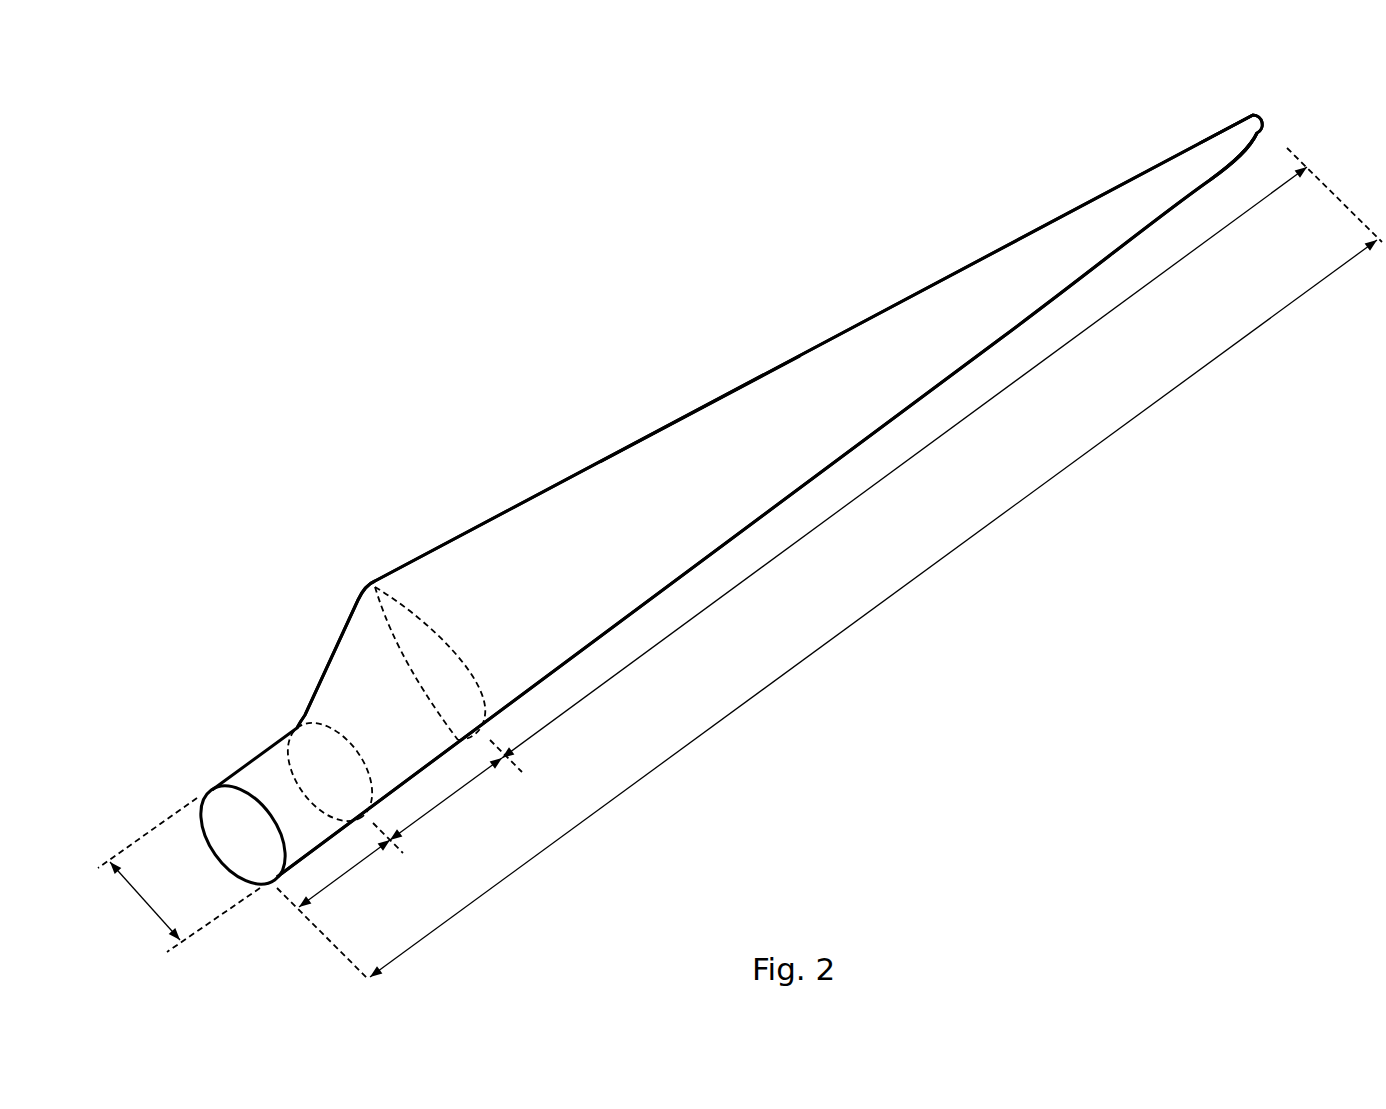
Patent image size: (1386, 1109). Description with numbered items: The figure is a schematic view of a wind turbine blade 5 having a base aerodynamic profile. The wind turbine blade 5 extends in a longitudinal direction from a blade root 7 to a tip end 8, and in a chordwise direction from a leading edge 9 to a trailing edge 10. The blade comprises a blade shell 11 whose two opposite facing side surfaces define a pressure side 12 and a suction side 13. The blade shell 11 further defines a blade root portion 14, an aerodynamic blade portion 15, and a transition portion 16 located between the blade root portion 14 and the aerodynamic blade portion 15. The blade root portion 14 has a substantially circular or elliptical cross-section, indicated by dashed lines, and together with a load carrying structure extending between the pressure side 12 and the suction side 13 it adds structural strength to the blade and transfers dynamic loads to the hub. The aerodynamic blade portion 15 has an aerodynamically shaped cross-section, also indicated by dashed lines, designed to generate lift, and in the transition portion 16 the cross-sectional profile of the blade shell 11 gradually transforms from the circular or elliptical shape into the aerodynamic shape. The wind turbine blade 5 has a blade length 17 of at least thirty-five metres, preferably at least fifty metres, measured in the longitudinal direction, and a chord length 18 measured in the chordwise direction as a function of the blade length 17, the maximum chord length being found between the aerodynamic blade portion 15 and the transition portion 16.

The wind turbine blade 5 is at (533, 364).
The blade root 7 is at (232, 852).
The tip end 8 is at (1255, 113).
The leading edge 9 is at (940, 380).
The trailing edge 10 is at (953, 270).
The blade shell 11 is at (713, 417).
The pressure side 12 is at (385, 637).
The suction side 13 is at (821, 409).
The blade root portion 14 is at (343, 872).
The aerodynamic blade portion 15 is at (823, 518).
The transition portion 16 is at (447, 797).
The blade length 17 is at (787, 673).
The chord length 18 is at (152, 912).